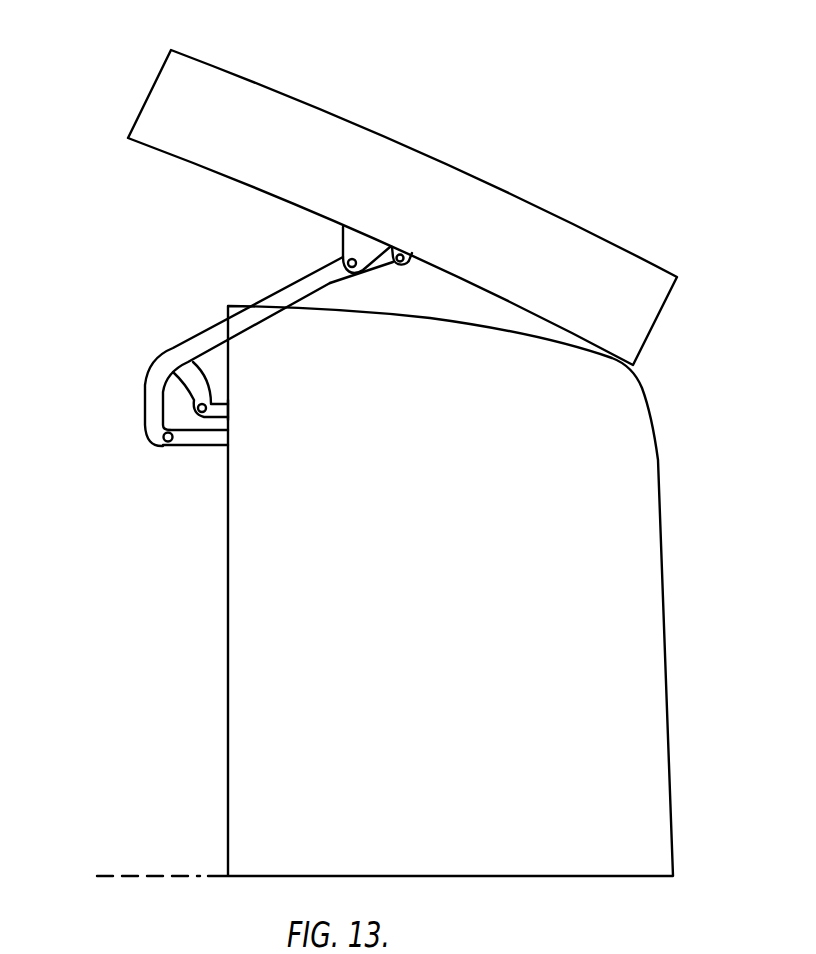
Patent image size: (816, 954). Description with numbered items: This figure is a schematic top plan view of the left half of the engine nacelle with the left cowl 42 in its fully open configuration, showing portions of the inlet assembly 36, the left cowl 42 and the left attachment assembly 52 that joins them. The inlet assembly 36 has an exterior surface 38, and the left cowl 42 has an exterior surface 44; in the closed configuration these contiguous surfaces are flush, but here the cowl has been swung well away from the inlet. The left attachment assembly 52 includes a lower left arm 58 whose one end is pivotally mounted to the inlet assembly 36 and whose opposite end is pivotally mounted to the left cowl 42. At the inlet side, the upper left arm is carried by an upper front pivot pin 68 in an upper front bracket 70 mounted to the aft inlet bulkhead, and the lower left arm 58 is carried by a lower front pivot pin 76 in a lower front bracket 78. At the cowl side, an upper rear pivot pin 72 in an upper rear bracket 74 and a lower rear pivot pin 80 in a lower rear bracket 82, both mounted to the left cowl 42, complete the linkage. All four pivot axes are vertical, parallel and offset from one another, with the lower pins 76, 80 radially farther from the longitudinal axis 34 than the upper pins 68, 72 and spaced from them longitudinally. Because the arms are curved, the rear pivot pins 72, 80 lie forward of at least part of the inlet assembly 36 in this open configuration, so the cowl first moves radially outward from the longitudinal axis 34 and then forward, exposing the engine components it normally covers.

The longitudinal axis 34 is at (136, 870).
The inlet assembly 36 is at (462, 591).
The exterior surface 38 is at (579, 512).
The left cowl 42 is at (402, 186).
The exterior surface 44 is at (262, 143).
The left attachment assembly 52 is at (168, 313).
The lower left arm 58 is at (213, 315).
The upper front pivot pin 68 is at (174, 448).
The upper front bracket 70 is at (215, 448).
The upper rear pivot pin 72 is at (343, 258).
The upper rear bracket 74 is at (340, 228).
The lower front pivot pin 76 is at (200, 386).
The lower front bracket 78 is at (224, 398).
The lower rear pivot pin 80 is at (396, 265).
The lower rear bracket 82 is at (413, 258).